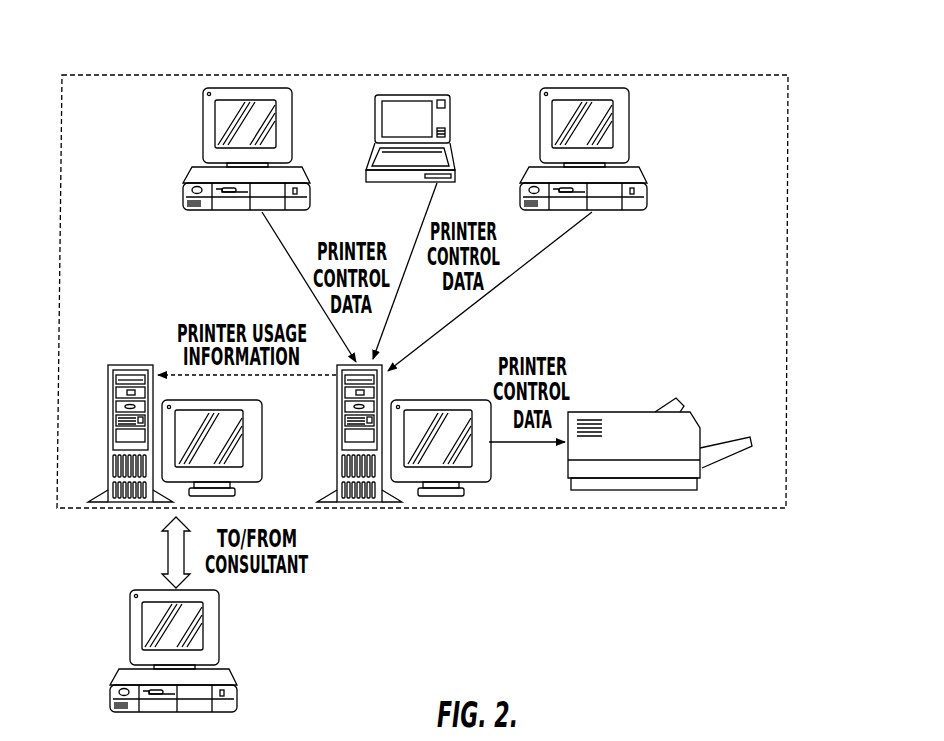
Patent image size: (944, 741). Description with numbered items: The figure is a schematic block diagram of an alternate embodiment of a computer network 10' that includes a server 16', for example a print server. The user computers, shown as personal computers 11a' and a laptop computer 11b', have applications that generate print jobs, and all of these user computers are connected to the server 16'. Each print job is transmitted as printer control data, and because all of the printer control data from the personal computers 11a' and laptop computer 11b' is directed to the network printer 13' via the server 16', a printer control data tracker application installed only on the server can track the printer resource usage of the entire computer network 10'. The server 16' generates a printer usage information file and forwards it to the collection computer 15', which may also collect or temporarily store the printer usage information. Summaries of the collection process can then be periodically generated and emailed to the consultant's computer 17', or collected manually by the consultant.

The computer network 10' is at (472, 272).
The personal computers 11a' is at (415, 118).
The laptop computers 11b' is at (410, 104).
The network printer 13' is at (698, 436).
The collection computer 15' is at (142, 458).
The server 16' is at (404, 475).
The consultant's computer 17' is at (202, 651).